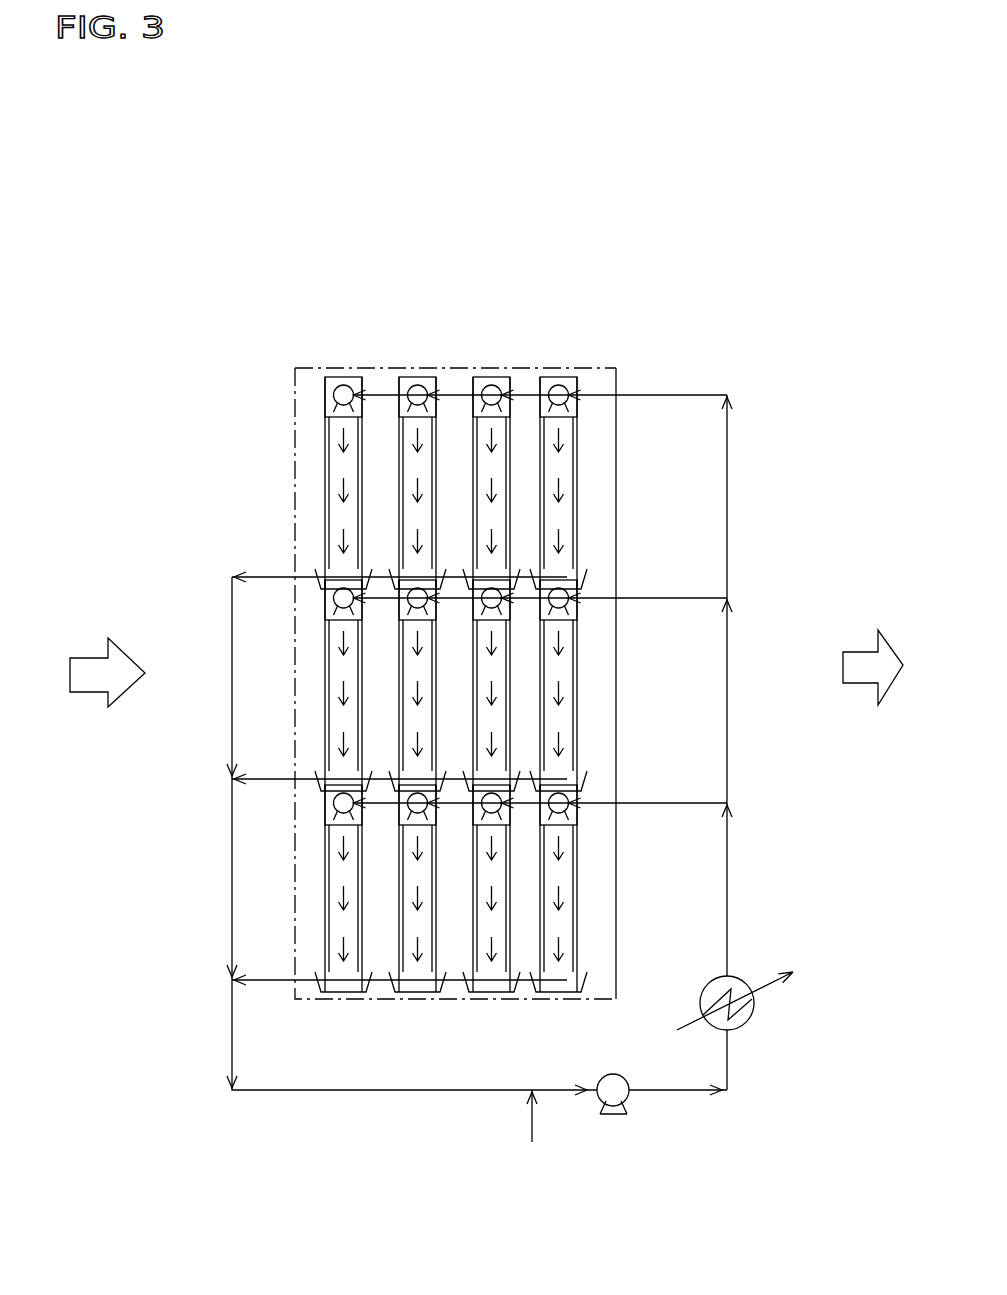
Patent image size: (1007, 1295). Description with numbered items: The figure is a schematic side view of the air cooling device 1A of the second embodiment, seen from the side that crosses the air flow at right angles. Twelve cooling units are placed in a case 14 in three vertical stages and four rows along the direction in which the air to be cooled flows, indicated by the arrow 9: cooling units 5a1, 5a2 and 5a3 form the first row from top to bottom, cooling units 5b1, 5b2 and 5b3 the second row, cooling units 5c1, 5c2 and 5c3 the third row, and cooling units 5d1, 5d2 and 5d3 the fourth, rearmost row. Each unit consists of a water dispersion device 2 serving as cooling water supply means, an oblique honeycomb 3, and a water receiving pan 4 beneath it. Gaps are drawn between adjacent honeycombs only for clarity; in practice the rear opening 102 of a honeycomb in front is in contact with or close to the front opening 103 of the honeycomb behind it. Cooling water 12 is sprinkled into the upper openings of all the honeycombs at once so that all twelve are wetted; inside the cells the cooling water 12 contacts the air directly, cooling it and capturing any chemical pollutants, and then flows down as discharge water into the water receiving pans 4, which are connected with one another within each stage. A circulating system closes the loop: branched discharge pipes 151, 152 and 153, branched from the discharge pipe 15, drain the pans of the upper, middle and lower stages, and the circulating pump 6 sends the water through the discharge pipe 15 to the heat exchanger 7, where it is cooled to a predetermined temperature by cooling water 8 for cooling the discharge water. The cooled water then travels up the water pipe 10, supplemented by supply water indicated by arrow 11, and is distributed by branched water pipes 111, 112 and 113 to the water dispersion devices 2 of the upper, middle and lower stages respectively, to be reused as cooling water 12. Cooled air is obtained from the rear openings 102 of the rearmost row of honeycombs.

The air cooling device 1A is at (752, 320).
The water dispersion device 2 is at (330, 395).
The oblique honeycomb 3 is at (332, 462).
The water receiving pan 4 is at (318, 571).
The cooling unit 5a1 is at (228, 327).
The cooling unit 5b1 is at (438, 358).
The cooling unit 5c1 is at (513, 358).
The cooling unit 5d1 is at (584, 358).
The cooling unit 5a2 is at (325, 665).
The cooling unit 5b2 is at (400, 710).
The cooling unit 5c2 is at (510, 718).
The cooling unit 5d2 is at (582, 650).
The cooling unit 5a3 is at (325, 878).
The cooling unit 5b3 is at (400, 885).
The cooling unit 5c3 is at (510, 935).
The cooling unit 5d3 is at (585, 858).
The circulating pump 6 is at (620, 1114).
The heat exchanger 7 is at (746, 1022).
The cooling water for cooling discharge water 8 is at (780, 990).
The arrow indicating the direction in which air flows 9 is at (90, 692).
The water pipe 10 is at (727, 520).
The arrow indicating supply water 11 is at (530, 1125).
The cooling water 12 is at (362, 400).
The case 14 is at (323, 368).
The discharge pipe 15 is at (230, 1040).
The rear opening of the oblique honeycomb 102 is at (582, 745).
The front opening of the oblique honeycomb 103 is at (345, 740).
The branched water pipe 111 is at (677, 392).
The branched water pipe 112 is at (655, 596).
The branched water pipe 113 is at (695, 801).
The branched discharge pipe 151 is at (270, 576).
The branched discharge pipe 152 is at (268, 786).
The branched discharge pipe 153 is at (270, 982).